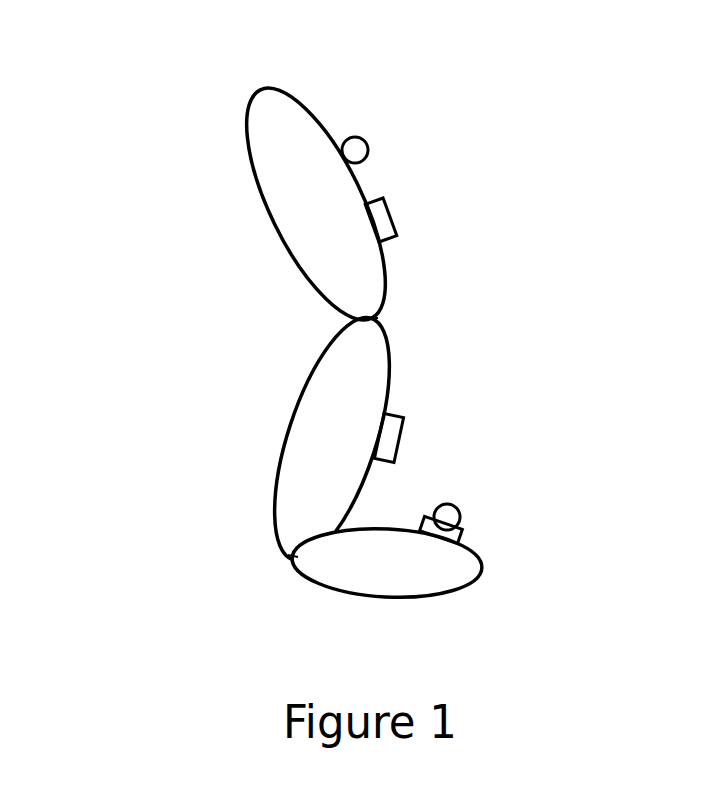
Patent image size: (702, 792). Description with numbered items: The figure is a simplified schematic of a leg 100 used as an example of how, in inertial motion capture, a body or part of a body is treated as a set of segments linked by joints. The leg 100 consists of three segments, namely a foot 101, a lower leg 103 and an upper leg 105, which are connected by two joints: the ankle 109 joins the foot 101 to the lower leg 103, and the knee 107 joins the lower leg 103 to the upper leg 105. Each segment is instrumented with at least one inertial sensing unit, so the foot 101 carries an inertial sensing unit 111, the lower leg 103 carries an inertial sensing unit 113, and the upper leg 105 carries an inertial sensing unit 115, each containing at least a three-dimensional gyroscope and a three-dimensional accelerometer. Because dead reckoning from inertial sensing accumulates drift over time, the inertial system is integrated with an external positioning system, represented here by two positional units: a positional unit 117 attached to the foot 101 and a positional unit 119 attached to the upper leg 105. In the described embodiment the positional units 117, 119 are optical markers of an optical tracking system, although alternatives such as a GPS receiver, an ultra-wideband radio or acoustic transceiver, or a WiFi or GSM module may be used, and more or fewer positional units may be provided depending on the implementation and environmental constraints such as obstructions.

The leg 100 is at (307, 310).
The foot 101 is at (398, 572).
The lower leg 103 is at (360, 456).
The upper leg 105 is at (340, 212).
The knee 107 is at (360, 316).
The ankle 109 is at (281, 554).
The inertial sensing unit 111 is at (465, 545).
The inertial sensing unit 113 is at (407, 437).
The inertial sensing unit 115 is at (397, 222).
The positional unit 117 is at (460, 512).
The positional unit 119 is at (369, 152).